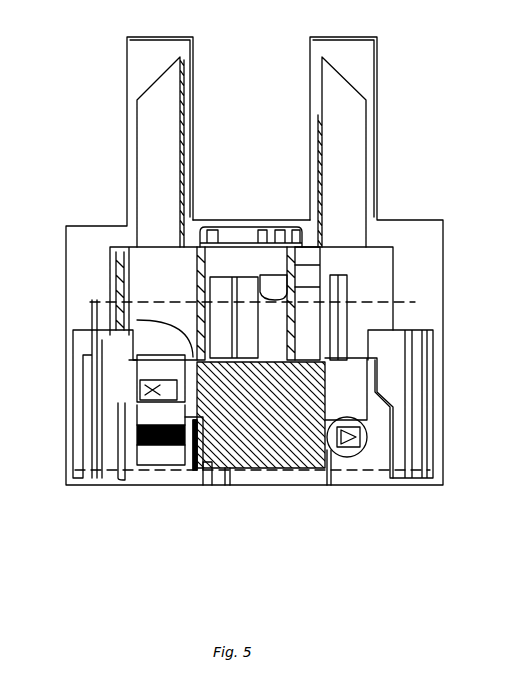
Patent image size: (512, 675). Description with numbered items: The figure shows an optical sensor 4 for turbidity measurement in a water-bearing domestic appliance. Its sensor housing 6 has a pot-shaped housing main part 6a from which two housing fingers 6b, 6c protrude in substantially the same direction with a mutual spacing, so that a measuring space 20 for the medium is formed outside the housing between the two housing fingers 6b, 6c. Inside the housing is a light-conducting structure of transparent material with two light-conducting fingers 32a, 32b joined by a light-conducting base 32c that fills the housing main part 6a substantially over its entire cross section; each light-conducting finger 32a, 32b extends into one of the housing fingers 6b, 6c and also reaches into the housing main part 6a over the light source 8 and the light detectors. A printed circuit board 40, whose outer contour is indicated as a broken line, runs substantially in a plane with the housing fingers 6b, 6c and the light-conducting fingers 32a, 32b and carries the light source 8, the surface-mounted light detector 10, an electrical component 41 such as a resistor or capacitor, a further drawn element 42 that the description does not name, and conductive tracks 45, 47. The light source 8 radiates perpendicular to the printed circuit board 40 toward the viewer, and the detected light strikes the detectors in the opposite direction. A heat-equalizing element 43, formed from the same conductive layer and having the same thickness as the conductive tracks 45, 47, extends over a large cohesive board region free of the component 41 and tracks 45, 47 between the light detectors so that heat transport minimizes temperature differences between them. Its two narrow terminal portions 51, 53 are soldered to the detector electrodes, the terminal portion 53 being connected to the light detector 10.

The optical sensor 4 is at (443, 255).
The sensor housing 6 is at (433, 280).
The housing main part 6a is at (437, 470).
The housing finger 6b is at (127, 72).
The housing finger 6c is at (378, 85).
The light source 8 is at (175, 485).
The light detector 10 is at (350, 485).
The measuring space 20 is at (257, 112).
The light-conducting finger 32a is at (138, 128).
The light-conducting finger 32b is at (366, 138).
The light-conducting base 32c is at (260, 262).
The printed circuit board 40 is at (240, 485).
The electrical component 41 is at (147, 410).
The bracket 42 is at (133, 398).
The heat-equalizing element 43 is at (310, 485).
The conductive track 45 is at (202, 485).
The conductive track 47 is at (228, 485).
The terminal portion 51 is at (92, 322).
The terminal portion 53 is at (333, 485).